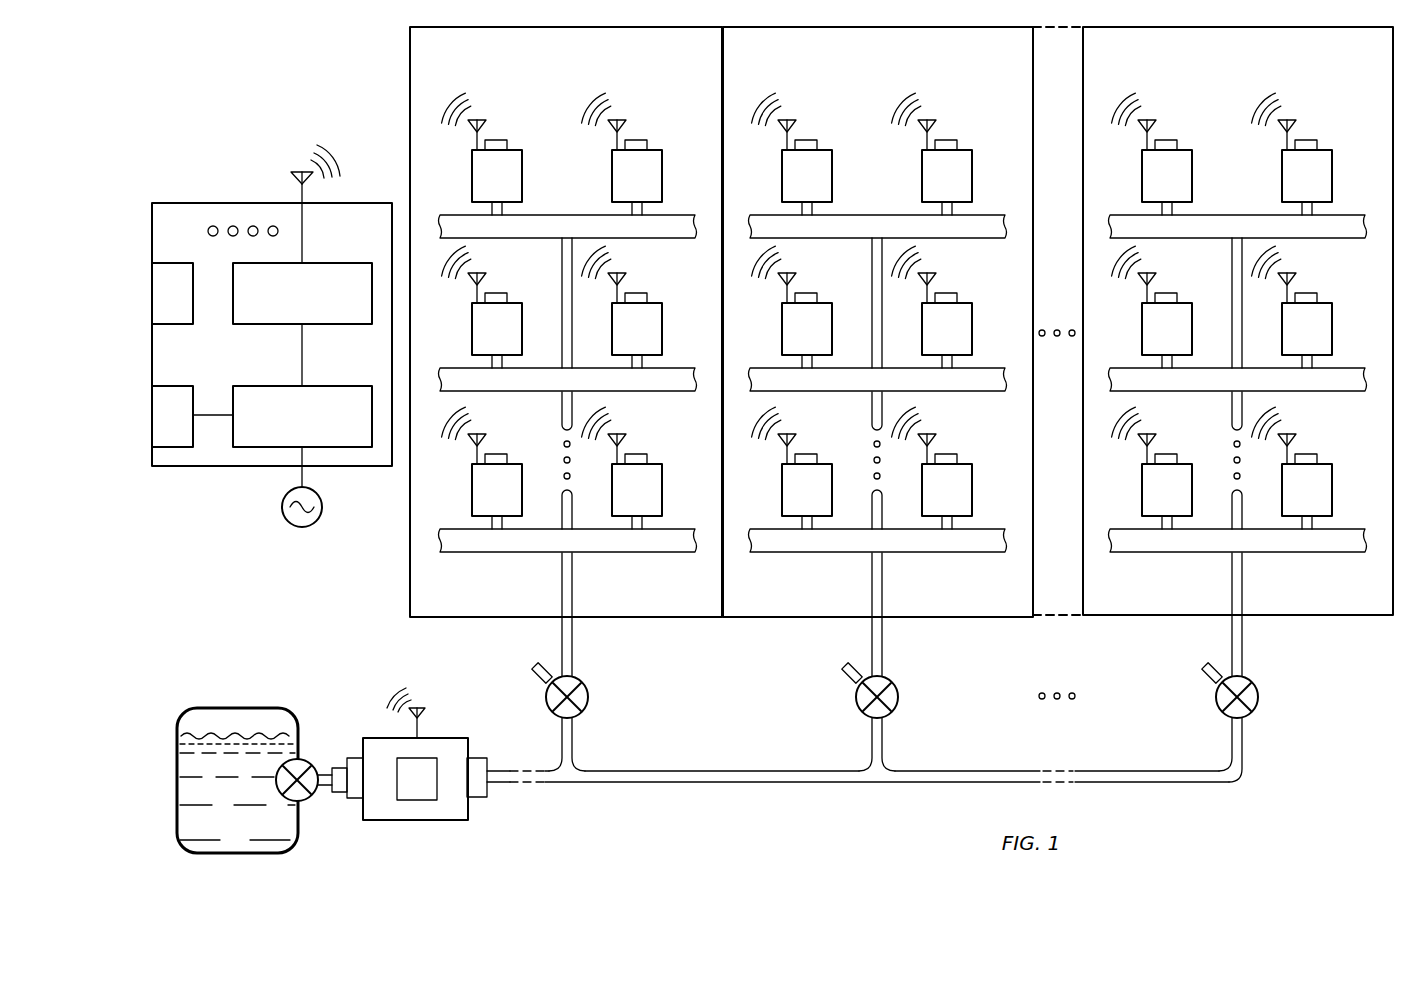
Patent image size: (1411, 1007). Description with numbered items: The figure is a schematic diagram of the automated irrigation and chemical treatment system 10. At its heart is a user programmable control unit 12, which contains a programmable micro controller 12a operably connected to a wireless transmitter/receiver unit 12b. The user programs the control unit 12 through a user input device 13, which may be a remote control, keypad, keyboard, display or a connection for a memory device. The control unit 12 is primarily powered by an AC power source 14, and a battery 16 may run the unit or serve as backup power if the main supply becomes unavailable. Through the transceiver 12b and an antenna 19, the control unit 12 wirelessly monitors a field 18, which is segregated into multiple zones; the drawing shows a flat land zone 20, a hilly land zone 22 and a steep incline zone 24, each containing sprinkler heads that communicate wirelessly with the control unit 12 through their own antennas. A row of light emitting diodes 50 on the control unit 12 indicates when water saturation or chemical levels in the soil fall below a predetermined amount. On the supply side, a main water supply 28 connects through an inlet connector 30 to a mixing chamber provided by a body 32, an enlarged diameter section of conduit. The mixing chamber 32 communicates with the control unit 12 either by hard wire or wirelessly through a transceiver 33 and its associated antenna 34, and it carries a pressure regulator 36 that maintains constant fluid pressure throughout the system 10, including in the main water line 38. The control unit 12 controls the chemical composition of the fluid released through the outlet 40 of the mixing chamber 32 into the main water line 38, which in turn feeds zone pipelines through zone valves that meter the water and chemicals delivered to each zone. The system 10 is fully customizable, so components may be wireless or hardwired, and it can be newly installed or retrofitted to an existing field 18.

The automated irrigation and chemical treatment system 10 is at (254, 74).
The control unit 12 is at (218, 474).
The micro controller 12a is at (272, 385).
The wireless transmitter/receiver unit 12b is at (332, 325).
The user input device 13 is at (161, 428).
The AC power source 14 is at (293, 527).
The battery 16 is at (161, 305).
The field 18 is at (304, 156).
The antenna 19 is at (297, 170).
The zone 20 is at (439, 595).
The zone 22 is at (751, 595).
The zone 24 is at (1111, 592).
The main water supply 28 is at (238, 707).
The inlet connector 30 is at (338, 766).
The mixing chamber 32 is at (415, 766).
The transceiver 33 is at (406, 792).
The antenna 34 is at (420, 707).
The pressure regulator 36 is at (361, 800).
The main water line 38 is at (497, 790).
The outlet 40 is at (477, 757).
The light emitting diodes 50 is at (200, 220).